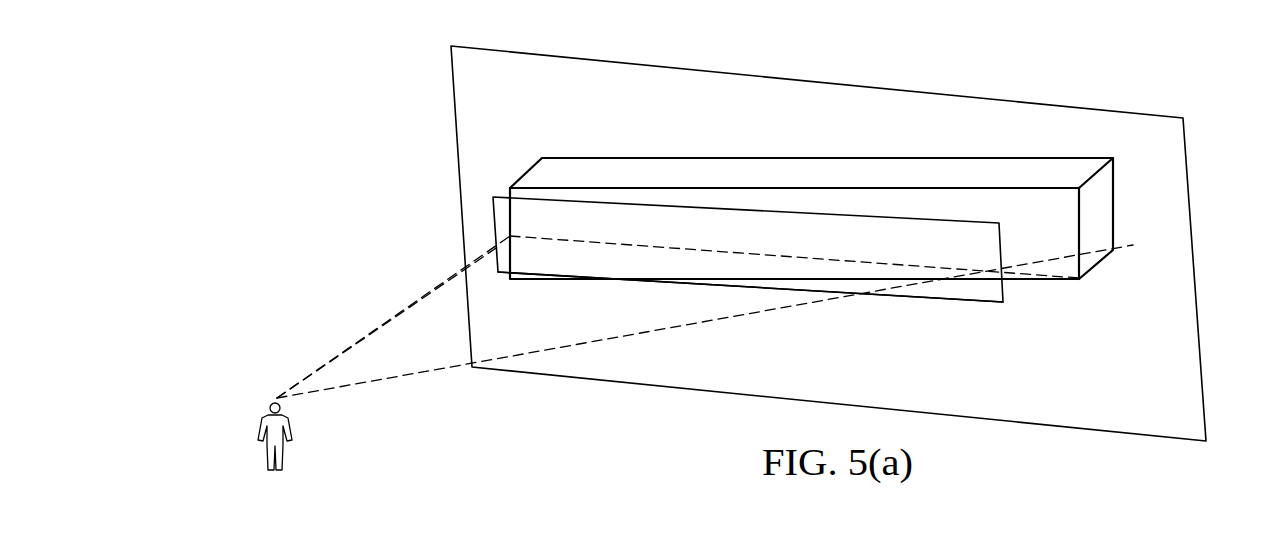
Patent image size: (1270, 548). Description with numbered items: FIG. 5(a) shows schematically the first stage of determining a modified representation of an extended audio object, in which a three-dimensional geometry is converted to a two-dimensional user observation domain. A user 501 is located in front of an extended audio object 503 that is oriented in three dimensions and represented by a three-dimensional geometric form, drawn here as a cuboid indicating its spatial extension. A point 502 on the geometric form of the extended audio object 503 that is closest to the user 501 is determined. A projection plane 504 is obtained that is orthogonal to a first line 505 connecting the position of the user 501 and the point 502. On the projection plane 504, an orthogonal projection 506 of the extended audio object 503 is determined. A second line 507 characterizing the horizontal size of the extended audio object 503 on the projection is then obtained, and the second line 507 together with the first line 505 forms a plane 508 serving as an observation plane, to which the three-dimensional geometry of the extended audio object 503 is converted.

The user 501 is at (262, 457).
The point 502 is at (511, 238).
The extended audio object 503 is at (865, 158).
The projection plane 504 is at (1195, 282).
The first line 505 is at (446, 280).
The orthogonal projection 506 is at (937, 298).
The second line 507 is at (735, 252).
The plane 508 is at (404, 354).